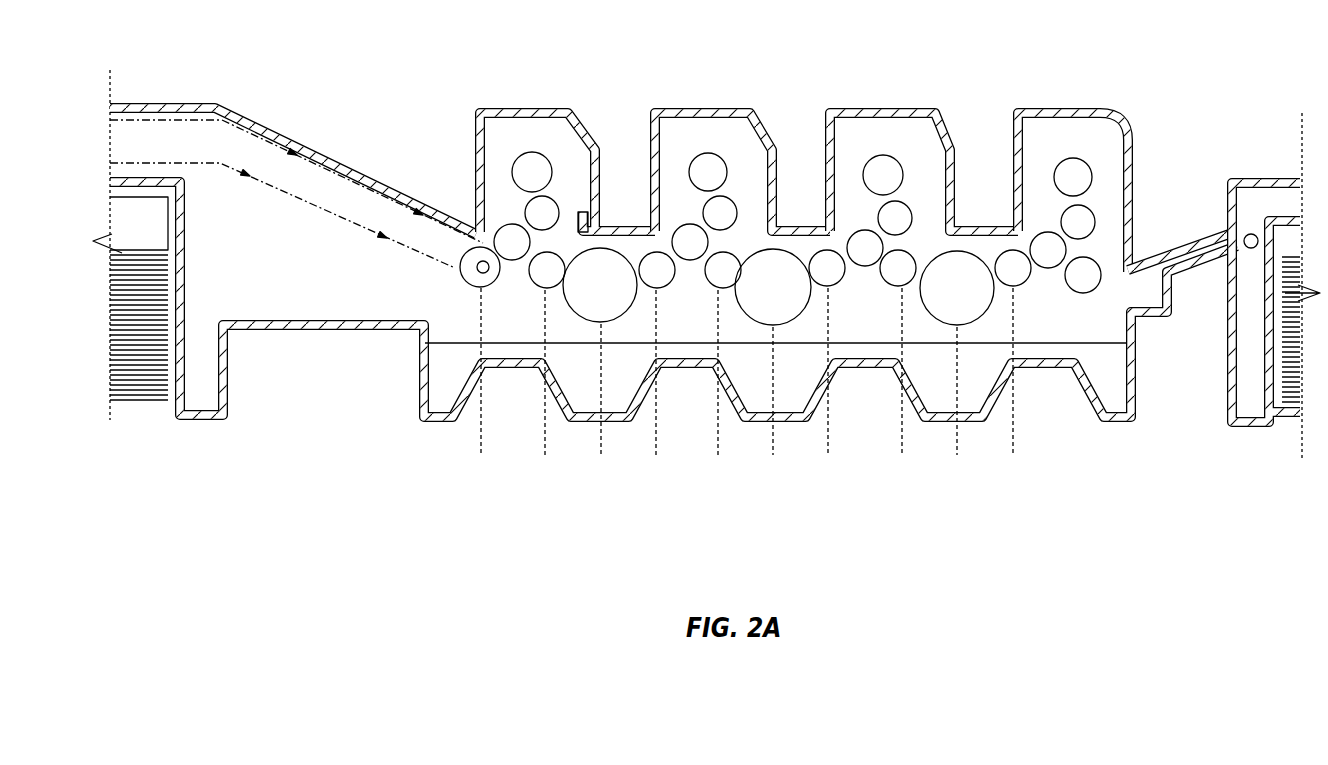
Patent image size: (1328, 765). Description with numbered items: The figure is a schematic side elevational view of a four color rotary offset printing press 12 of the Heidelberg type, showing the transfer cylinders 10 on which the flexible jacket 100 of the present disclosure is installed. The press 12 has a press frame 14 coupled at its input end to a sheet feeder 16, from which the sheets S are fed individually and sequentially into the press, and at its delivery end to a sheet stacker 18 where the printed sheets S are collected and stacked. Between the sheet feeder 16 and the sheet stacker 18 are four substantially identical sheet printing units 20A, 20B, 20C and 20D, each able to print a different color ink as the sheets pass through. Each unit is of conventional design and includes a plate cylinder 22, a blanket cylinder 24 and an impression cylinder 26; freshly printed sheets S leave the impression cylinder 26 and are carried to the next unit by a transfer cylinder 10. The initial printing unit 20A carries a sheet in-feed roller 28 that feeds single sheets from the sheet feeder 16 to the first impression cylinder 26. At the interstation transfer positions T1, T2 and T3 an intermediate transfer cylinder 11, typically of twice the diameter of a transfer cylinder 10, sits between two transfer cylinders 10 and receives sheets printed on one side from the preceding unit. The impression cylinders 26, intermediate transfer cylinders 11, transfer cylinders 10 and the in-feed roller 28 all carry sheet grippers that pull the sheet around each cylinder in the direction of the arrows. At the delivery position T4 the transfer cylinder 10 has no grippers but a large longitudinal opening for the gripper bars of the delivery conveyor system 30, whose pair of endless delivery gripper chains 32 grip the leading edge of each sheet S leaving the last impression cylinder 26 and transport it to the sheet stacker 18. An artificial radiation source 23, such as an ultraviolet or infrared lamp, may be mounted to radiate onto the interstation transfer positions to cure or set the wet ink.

The transfer cylinder 10 is at (538, 284).
The intermediate transfer cylinder 11 is at (594, 310).
The rotary offset printing press 12 is at (792, 139).
The press frame 14 is at (1136, 146).
The sheet feeder 16 is at (1292, 247).
The sheet stacker 18 is at (144, 178).
The initial sheet printing unit 20A is at (1028, 108).
The sheet printing unit 20B is at (842, 110).
The sheet printing unit 20C is at (666, 107).
The sheet printing unit 20D is at (490, 107).
The plate cylinder 22 is at (535, 152).
The artificial radiation source 23 is at (603, 208).
The blanket cylinder 24 is at (554, 199).
The impression cylinder 26 is at (510, 224).
The sheet in-feed roller 28 is at (1093, 290).
The delivery conveyor system 30 is at (336, 150).
The delivery gripper chains 32 is at (296, 206).
The flexible jacket 100 is at (474, 284).
The sheet S is at (1134, 210).
The interstation transfer position T1 is at (834, 390).
The interstation transfer position T2 is at (779, 408).
The interstation transfer position T3 is at (723, 390).
The delivery position T4 is at (481, 390).